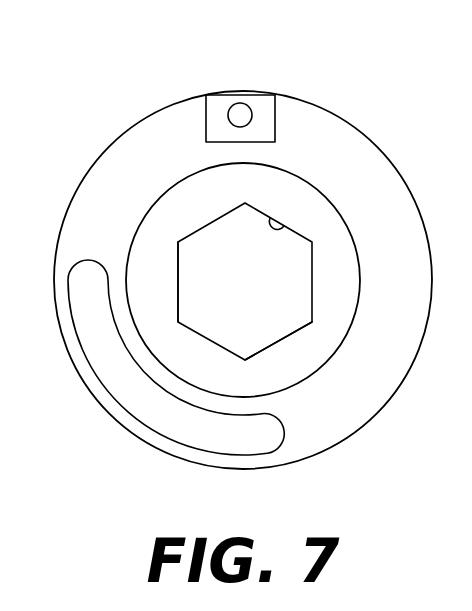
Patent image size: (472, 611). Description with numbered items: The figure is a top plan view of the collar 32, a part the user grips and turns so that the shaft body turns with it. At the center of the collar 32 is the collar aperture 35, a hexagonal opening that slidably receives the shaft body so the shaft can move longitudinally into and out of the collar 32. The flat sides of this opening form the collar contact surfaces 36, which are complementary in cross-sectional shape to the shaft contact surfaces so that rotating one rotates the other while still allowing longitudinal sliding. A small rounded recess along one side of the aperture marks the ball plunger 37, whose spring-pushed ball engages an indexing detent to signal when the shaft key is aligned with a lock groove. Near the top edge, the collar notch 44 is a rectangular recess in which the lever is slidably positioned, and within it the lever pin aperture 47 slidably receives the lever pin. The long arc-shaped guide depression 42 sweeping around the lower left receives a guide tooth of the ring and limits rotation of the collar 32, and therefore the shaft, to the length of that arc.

The collar 32 is at (75, 57).
The collar aperture 35 is at (246, 285).
The collar contact surfaces 36 is at (192, 299).
The ball plunger 37 is at (284, 226).
The guide depression 42 is at (113, 367).
The collar notch 44 is at (215, 121).
The lever pin aperture 47 is at (247, 113).